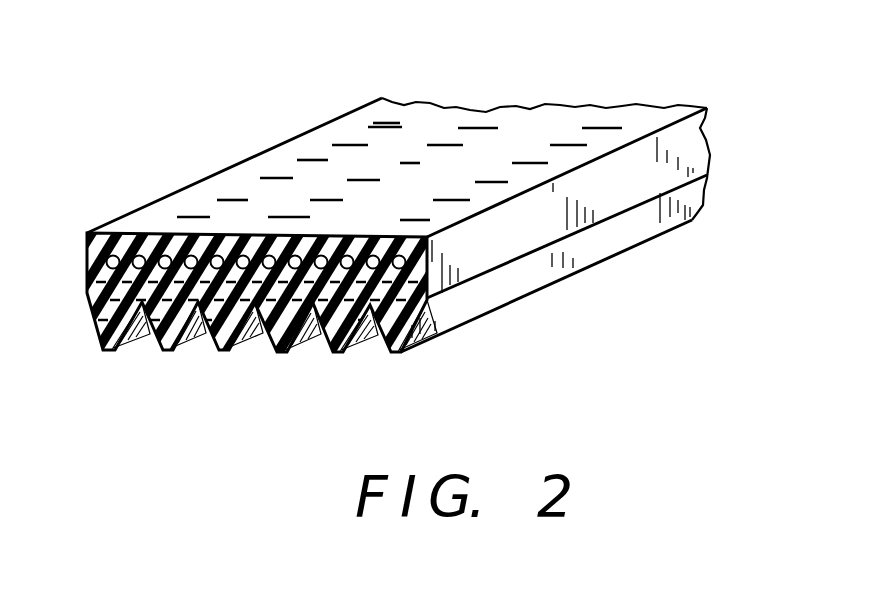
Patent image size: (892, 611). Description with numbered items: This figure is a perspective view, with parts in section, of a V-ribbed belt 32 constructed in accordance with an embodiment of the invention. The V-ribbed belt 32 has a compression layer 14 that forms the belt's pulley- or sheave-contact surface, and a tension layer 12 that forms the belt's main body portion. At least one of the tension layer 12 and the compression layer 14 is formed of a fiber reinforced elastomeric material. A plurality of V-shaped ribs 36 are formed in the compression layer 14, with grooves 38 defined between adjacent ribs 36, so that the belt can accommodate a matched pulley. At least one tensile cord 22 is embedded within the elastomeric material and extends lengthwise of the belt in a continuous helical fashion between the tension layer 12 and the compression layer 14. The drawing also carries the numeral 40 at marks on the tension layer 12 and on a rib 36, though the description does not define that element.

The V-ribbed belt 32 is at (215, 137).
The tension layer 12 is at (413, 140).
The compression layer 14 is at (502, 338).
The tensile cord 22 is at (163, 255).
The V-shaped ribs 36 is at (107, 348).
The grooves 38 is at (192, 343).
The fiber texture marks 40 is at (350, 143).